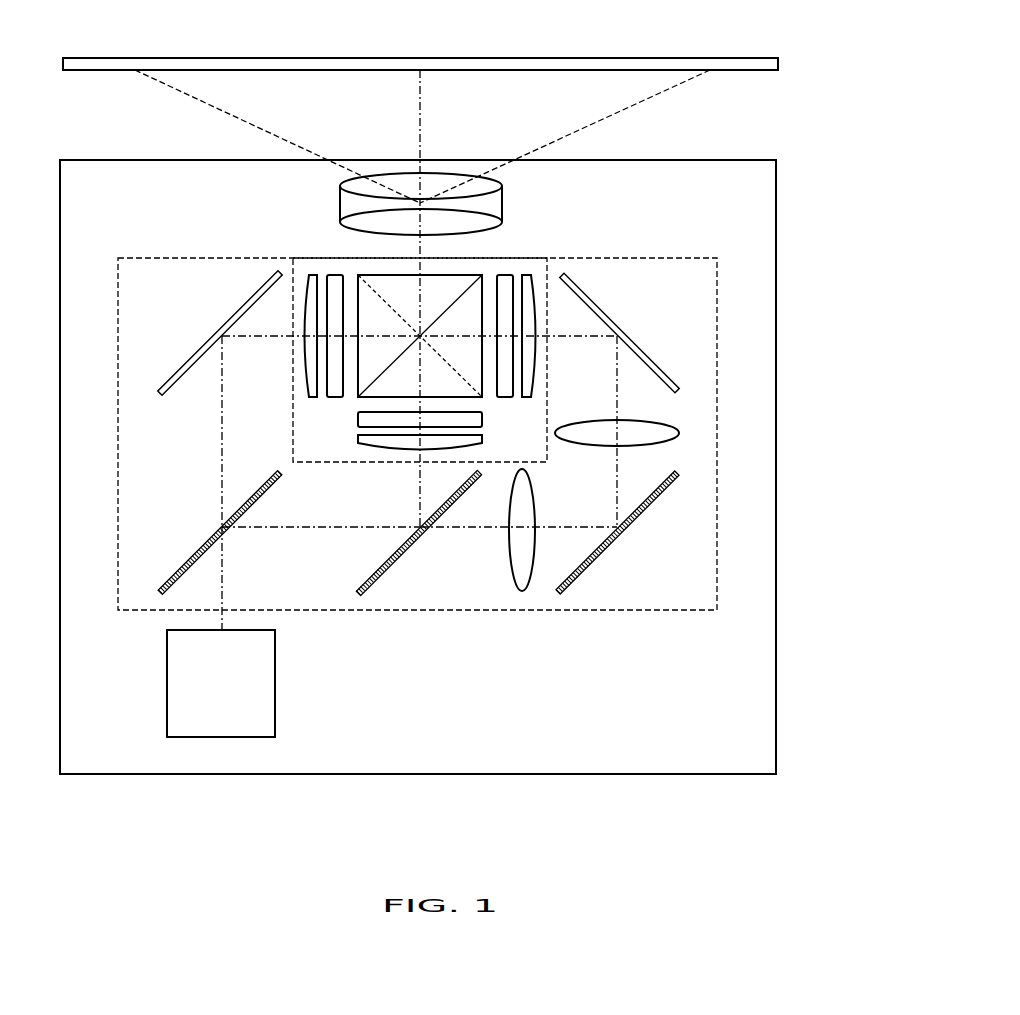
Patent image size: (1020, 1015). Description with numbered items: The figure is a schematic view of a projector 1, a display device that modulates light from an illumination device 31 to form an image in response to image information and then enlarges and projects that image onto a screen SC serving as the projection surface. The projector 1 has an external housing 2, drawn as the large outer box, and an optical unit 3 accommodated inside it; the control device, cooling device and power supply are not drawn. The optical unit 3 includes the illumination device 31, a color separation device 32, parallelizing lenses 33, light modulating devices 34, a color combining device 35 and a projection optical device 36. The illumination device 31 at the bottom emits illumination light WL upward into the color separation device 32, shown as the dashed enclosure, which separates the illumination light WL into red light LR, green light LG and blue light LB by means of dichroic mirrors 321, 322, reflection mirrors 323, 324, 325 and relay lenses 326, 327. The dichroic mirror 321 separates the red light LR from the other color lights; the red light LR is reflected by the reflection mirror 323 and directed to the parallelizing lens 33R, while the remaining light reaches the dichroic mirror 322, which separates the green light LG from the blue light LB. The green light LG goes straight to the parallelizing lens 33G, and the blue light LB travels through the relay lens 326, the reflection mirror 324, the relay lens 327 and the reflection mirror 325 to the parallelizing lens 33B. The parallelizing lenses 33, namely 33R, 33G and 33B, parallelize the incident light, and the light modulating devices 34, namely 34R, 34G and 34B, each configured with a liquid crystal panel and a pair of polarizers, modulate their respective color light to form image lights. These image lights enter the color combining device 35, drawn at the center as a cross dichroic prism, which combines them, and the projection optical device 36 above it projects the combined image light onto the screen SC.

The screen SC is at (746, 57).
The projector 1 is at (770, 138).
The external housing 2 is at (777, 392).
The optical unit 3 is at (642, 672).
The illumination device 31 is at (277, 680).
The color separation device 32 is at (433, 611).
The dichroic mirror 321 is at (187, 556).
The dichroic mirror 322 is at (400, 547).
The reflection mirror 323 is at (200, 350).
The reflection mirror 324 is at (640, 522).
The reflection mirror 325 is at (643, 352).
The relay lens 326 is at (523, 592).
The relay lens 327 is at (643, 422).
The parallelizing lens 33 is at (421, 373).
The parallelizing lens for red light 33R is at (337, 274).
The parallelizing lens for green light 33G is at (355, 442).
The parallelizing lens for blue light 33B is at (505, 274).
The light modulating device 34 is at (416, 322).
The light modulating device for red light 34R is at (313, 274).
The light modulating device for green light 34G is at (357, 420).
The light modulating device for blue light 34B is at (530, 274).
The color combining device 35 is at (438, 280).
The projection optical device 36 is at (502, 203).
The red light LR is at (221, 453).
The green light LG is at (419, 492).
The blue light LB is at (583, 527).
The illumination light WL is at (223, 577).